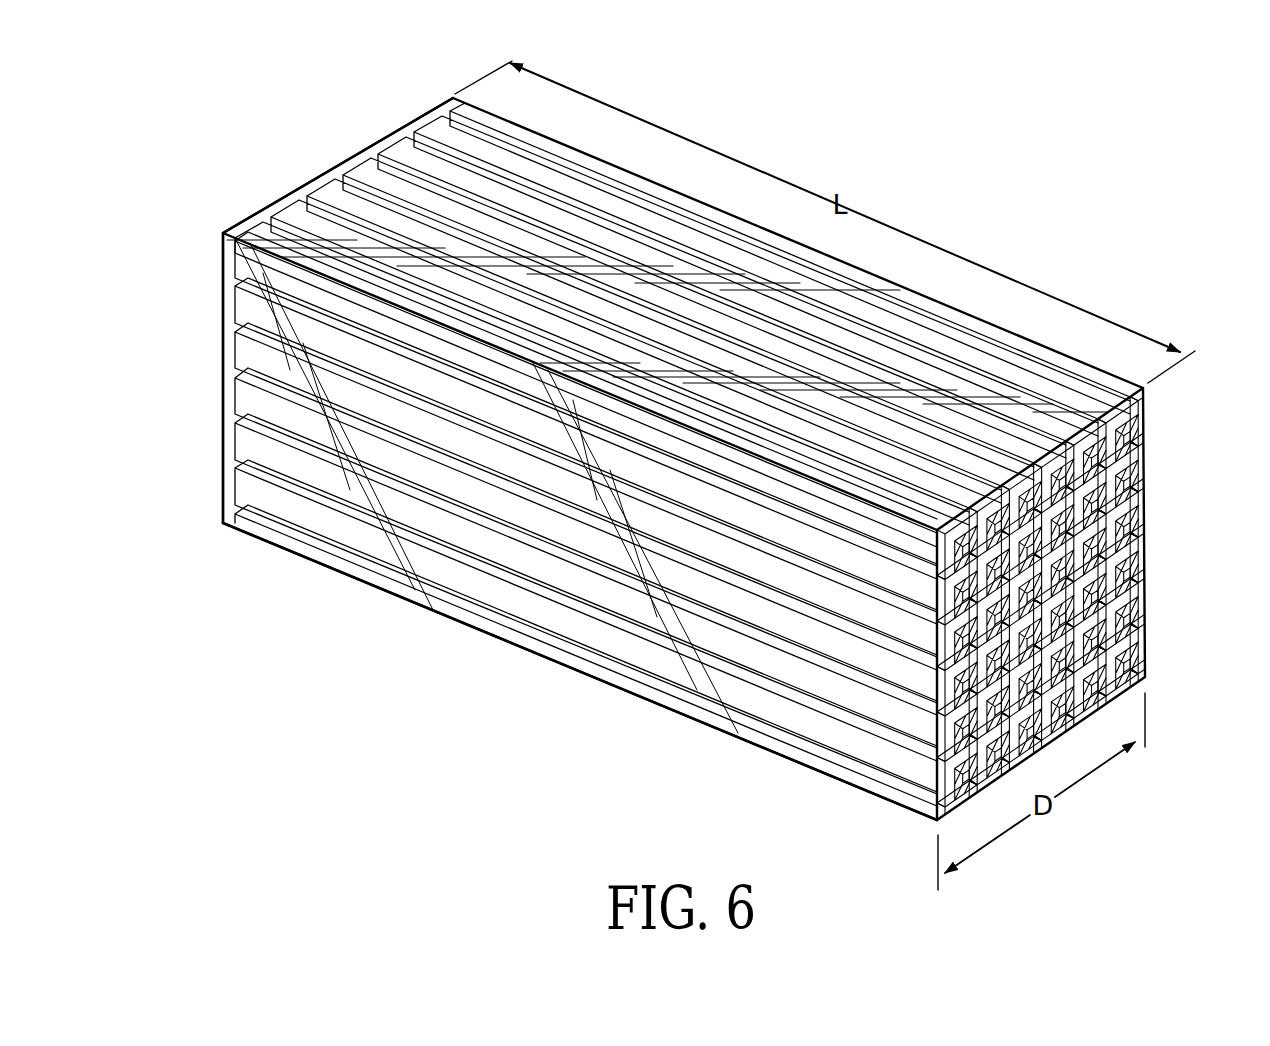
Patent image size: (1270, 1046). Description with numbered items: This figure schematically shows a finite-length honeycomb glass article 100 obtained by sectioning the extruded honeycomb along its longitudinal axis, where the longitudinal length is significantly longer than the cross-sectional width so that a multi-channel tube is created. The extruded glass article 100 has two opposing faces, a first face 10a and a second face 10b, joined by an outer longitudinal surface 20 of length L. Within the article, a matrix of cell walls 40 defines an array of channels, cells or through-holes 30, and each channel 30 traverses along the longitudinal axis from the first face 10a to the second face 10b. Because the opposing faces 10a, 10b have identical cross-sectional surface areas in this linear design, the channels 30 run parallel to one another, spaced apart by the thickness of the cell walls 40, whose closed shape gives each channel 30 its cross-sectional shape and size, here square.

The extruded glass article 100 is at (872, 147).
The first face 10a is at (1147, 510).
The second face 10b is at (347, 158).
The outer longitudinal surface 20 is at (563, 665).
The channels 30 is at (1132, 568).
The cell walls 40 is at (440, 543).